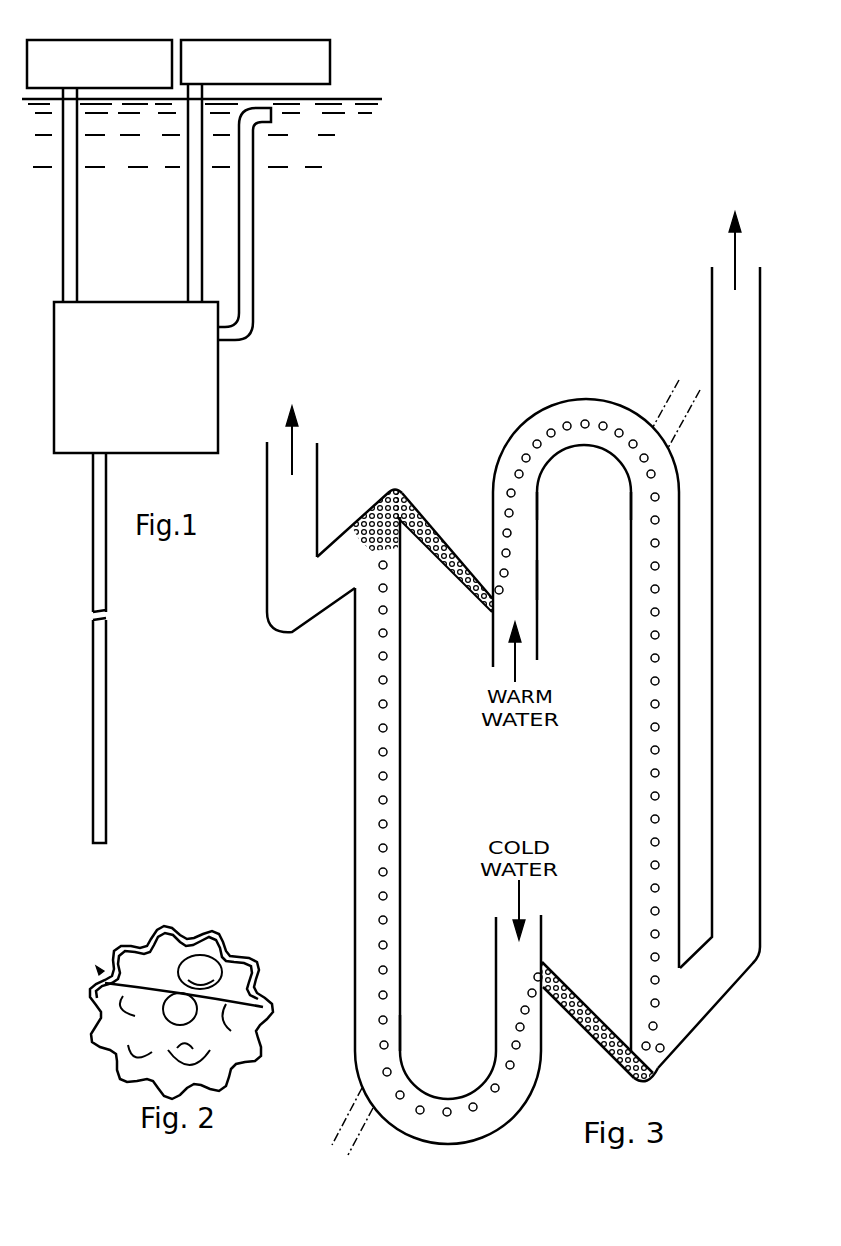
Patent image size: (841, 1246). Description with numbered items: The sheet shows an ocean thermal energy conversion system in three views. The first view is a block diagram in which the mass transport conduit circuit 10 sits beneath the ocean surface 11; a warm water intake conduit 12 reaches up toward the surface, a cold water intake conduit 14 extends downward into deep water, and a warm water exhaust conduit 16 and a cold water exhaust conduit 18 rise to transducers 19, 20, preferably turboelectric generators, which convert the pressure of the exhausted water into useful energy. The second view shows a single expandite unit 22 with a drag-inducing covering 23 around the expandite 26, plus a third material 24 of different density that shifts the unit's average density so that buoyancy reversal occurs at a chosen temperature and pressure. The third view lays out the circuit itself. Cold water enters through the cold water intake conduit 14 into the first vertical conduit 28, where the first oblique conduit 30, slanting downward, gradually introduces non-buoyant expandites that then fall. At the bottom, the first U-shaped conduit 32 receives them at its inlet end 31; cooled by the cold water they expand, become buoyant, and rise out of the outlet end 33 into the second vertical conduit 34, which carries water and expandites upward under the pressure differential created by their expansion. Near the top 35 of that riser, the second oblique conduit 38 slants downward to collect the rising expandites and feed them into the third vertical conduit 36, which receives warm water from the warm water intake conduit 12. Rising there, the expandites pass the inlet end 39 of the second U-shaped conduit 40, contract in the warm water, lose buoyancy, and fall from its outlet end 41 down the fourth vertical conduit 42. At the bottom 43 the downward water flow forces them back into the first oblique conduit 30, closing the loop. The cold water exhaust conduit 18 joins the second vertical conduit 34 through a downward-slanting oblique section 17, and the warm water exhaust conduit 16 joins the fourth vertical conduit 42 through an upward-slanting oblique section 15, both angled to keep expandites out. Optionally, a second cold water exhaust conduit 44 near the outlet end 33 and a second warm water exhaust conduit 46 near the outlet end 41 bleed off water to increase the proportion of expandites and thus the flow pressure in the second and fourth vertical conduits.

In FIG. 1, the mass transport conduit circuit 10 is at (147, 300).
In FIG. 1, the ocean surface 11 is at (330, 98).
In FIG. 1, the warm water intake conduit 12 is at (256, 240).
In FIG. 3, the warm water intake conduit 12 is at (537, 655).
In FIG. 1, the cold water intake conduit 14 is at (91, 485).
In FIG. 3, the cold water intake conduit 14 is at (543, 922).
In FIG. 3, the oblique section of the warm water exhaust conduit 15 is at (718, 1003).
In FIG. 1, the warm water exhaust conduit 16 is at (78, 203).
In FIG. 3, the warm water exhaust conduit 16 is at (712, 290).
In FIG. 3, the oblique section of the cold water exhaust conduit 17 is at (330, 615).
In FIG. 1, the cold water exhaust conduit 18 is at (188, 228).
In FIG. 3, the cold water exhaust conduit 18 is at (318, 452).
In FIG. 1, the transducer 19 is at (103, 40).
In FIG. 1, the transducer 20 is at (248, 40).
In FIG. 2, the expandite unit 22 is at (99, 969).
In FIG. 2, the covering 23 is at (115, 1045).
In FIG. 2, the third material 24 is at (208, 975).
In FIG. 2, the expandite 26 is at (166, 960).
In FIG. 3, the first vertical conduit 28 is at (496, 970).
In FIG. 3, the first oblique conduit 30 is at (578, 992).
In FIG. 3, the inlet end 31 is at (496, 1053).
In FIG. 3, the first U-shaped conduit 32 is at (439, 1094).
In FIG. 3, the outlet end 33 is at (403, 1053).
In FIG. 3, the second vertical conduit 34 is at (356, 892).
In FIG. 3, the top of the second vertical conduit 35 is at (375, 497).
In FIG. 3, the third vertical conduit 36 is at (538, 590).
In FIG. 3, the second oblique conduit 38 is at (437, 528).
In FIG. 3, the inlet end 39 is at (540, 492).
In FIG. 3, the second U-shaped conduit 40 is at (596, 446).
In FIG. 3, the outlet end 41 is at (628, 490).
In FIG. 3, the fourth vertical conduit 42 is at (631, 735).
In FIG. 3, the bottom of the fourth vertical conduit 43 is at (650, 1080).
In FIG. 3, the second cold water exhaust conduit 44 is at (340, 1128).
In FIG. 3, the second warm water exhaust conduit 46 is at (672, 392).